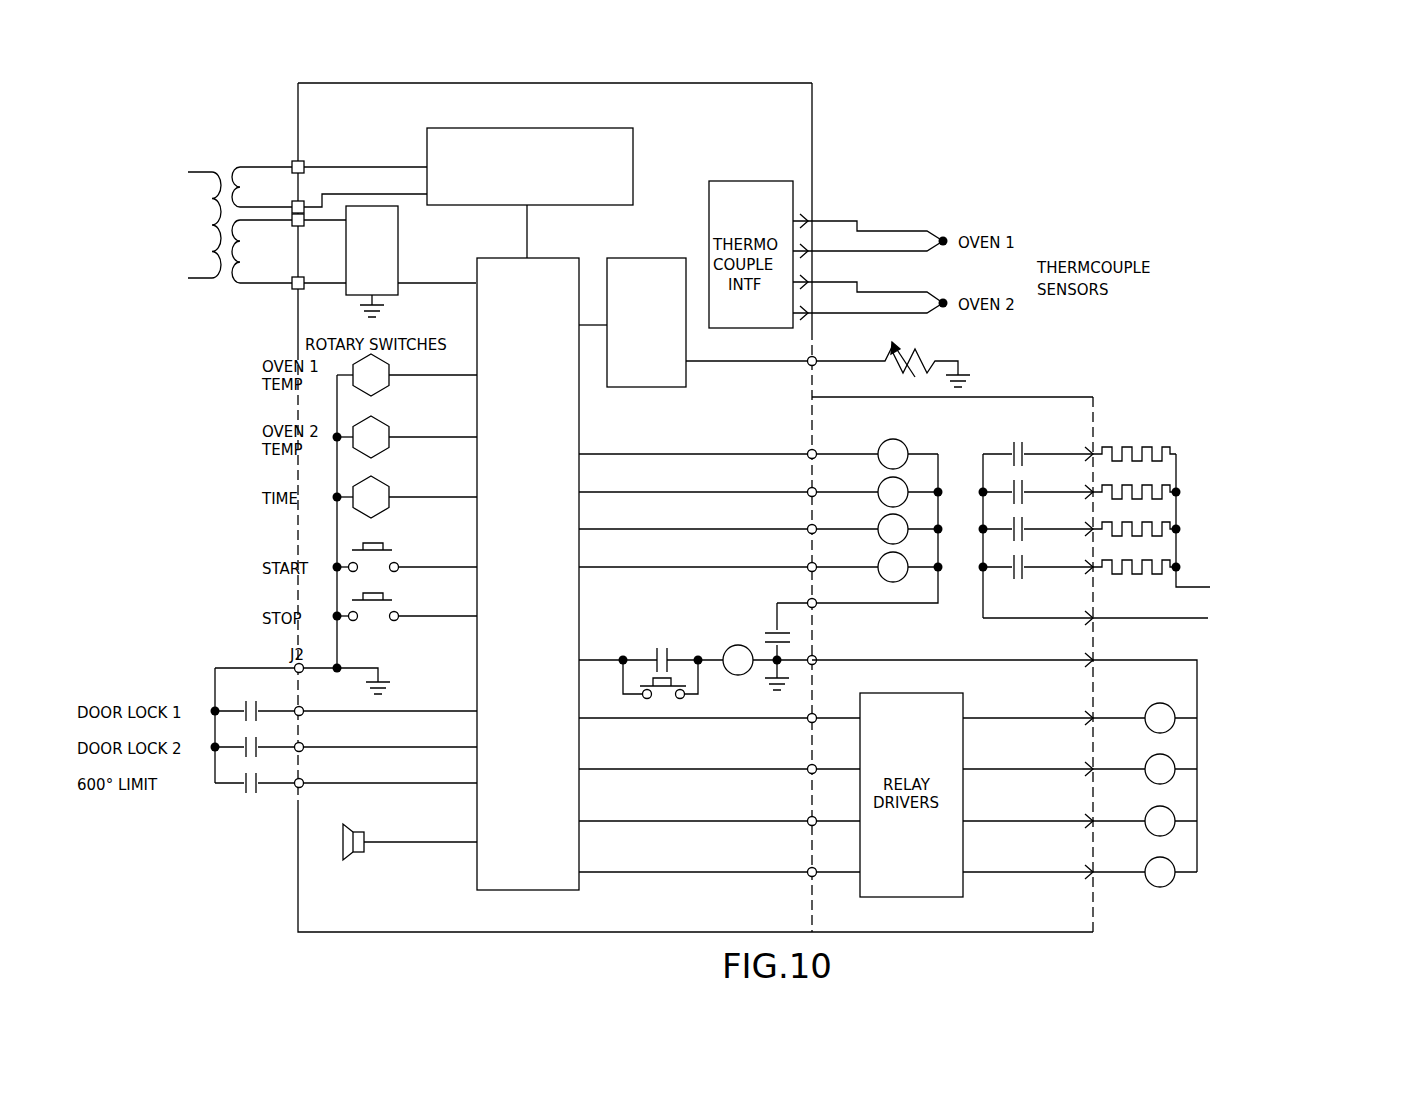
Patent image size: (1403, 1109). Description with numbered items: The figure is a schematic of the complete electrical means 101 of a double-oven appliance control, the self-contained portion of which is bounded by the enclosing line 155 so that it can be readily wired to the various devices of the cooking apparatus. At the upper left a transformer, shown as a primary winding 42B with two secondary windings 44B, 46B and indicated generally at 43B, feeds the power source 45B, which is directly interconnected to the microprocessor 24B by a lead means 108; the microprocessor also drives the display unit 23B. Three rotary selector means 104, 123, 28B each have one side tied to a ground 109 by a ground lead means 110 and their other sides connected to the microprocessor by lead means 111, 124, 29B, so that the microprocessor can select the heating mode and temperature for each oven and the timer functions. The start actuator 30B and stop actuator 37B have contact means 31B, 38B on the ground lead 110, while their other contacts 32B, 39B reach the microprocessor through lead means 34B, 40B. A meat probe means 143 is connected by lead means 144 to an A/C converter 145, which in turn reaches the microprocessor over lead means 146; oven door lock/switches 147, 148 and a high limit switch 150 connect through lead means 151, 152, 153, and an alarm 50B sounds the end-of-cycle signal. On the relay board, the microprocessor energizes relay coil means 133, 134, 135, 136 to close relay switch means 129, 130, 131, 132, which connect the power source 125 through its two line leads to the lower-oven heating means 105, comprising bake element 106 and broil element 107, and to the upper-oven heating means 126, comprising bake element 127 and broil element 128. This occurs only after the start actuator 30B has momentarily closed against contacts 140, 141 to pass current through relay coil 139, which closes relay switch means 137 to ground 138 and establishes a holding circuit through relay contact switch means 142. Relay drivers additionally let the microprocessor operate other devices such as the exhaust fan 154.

The electrical means 101 is at (1128, 158).
The enclosing line 155 is at (814, 162).
The transformer 43B is at (278, 229).
The transformer primary winding 42B is at (214, 222).
The 24 VAC secondary winding 44B is at (232, 287).
The 3 VAC secondary winding 46B is at (236, 172).
The power source 45B is at (400, 242).
The lead means 108 is at (412, 282).
The display unit 23B is at (636, 153).
The microprocessor 24B is at (576, 442).
The A/C converter 145 is at (636, 258).
The lead means 146 is at (590, 324).
The lead means 144 is at (740, 363).
The meat probe means 143 is at (930, 356).
The lead means 110 is at (335, 470).
The selector means 104 is at (382, 384).
The lead means 111 is at (450, 374).
The selector means 123 is at (390, 446).
The lead means 124 is at (472, 440).
The selector means 28B is at (386, 482).
The lead means 29B is at (460, 496).
The contact means 31B is at (350, 563).
The start actuator 30B is at (372, 545).
The contact 32B is at (398, 563).
The lead means 34B is at (460, 566).
The actuator 37B is at (384, 596).
The stop switch contact 38B is at (350, 612).
The contact 39B is at (397, 622).
The lead means 40B is at (460, 616).
The ground 109 is at (386, 682).
The oven door lock/switch 147 is at (238, 703).
The oven door lock/switch 148 is at (238, 755).
The high limit switch 150 is at (252, 800).
The lead means 151 is at (396, 710).
The lead means 152 is at (390, 746).
The lead means 153 is at (390, 782).
The alarm 50B is at (350, 830).
The relay coil means 133 is at (882, 444).
The relay coil means 134 is at (882, 482).
The relay coil means 135 is at (882, 520).
The relay coil means 136 is at (882, 558).
The relay switch means 137 is at (792, 640).
The ground 138 is at (792, 678).
The relay coil 139 is at (742, 646).
The relay contact switch means 142 is at (645, 653).
The contact 140 is at (642, 698).
The contact 141 is at (686, 698).
The relay switch means 129 is at (1022, 444).
The relay switch means 130 is at (1010, 480).
The relay switch means 131 is at (1008, 544).
The relay switch means 132 is at (1020, 586).
The bake element 106 is at (1165, 450).
The broil element 107 is at (1143, 500).
The bake element 127 is at (1152, 538).
The broil element 128 is at (1120, 576).
The heating means 105 is at (1183, 470).
The heating means 126 is at (1183, 548).
The power source 125 is at (1248, 610).
The exhaust fan 154 is at (1172, 703).